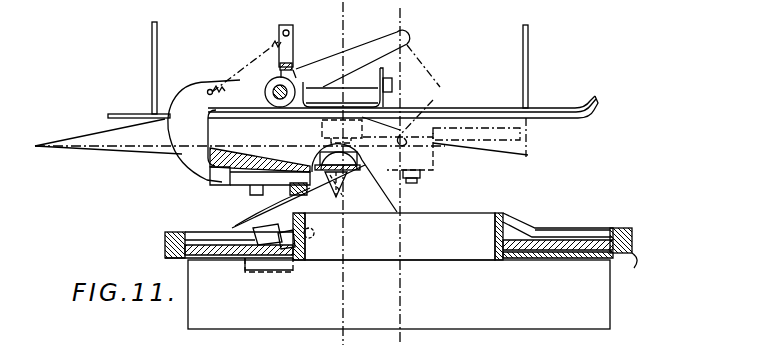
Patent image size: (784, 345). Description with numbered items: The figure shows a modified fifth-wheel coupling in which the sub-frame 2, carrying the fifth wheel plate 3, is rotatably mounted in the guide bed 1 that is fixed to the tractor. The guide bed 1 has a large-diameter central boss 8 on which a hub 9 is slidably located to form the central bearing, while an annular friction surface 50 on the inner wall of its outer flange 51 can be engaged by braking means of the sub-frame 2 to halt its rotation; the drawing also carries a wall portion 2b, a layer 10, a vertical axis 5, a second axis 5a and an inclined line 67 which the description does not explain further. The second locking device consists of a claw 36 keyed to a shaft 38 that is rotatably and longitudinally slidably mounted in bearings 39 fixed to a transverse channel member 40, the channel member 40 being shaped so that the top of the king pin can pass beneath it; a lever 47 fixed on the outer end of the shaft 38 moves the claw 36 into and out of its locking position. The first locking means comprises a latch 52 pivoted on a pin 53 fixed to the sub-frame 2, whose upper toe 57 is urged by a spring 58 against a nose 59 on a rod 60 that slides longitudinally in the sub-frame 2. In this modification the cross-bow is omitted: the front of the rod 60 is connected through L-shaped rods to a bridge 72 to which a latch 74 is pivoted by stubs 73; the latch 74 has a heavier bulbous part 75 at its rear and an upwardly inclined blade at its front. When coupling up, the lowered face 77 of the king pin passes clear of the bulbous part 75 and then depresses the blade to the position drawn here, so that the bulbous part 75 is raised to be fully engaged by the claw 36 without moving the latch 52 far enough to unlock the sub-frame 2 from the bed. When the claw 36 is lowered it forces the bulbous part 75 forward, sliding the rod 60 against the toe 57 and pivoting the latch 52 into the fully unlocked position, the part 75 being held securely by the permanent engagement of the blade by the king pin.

The guide bed 1 is at (592, 253).
The sub-frame 2 is at (551, 242).
The wall of sheet member 2b is at (390, 207).
The fifth wheel plate 3 is at (135, 160).
The axis 5 is at (401, 313).
The center axis 5a is at (344, 314).
The boss 8 is at (496, 232).
The hub 9 is at (510, 227).
The layer 10 is at (607, 233).
The claw 36 is at (173, 128).
The shaft 38 is at (271, 92).
The bearings 39 is at (331, 57).
The transverse channel member 40 is at (296, 66).
The lever 47 is at (434, 95).
The annular friction surface 50 is at (613, 229).
The outer flange 51 is at (633, 261).
The latch 52 is at (313, 230).
The pin 53 is at (306, 250).
The toe 57 is at (345, 185).
The spring 58 is at (287, 175).
The nose 59 is at (338, 192).
The rod 60 is at (322, 160).
The spring line 67 is at (246, 66).
The bridge 72 is at (262, 218).
The stubs 73 is at (292, 186).
The latch 74 is at (282, 163).
The bulbous part 75 is at (224, 152).
The lowered face 77 is at (350, 178).